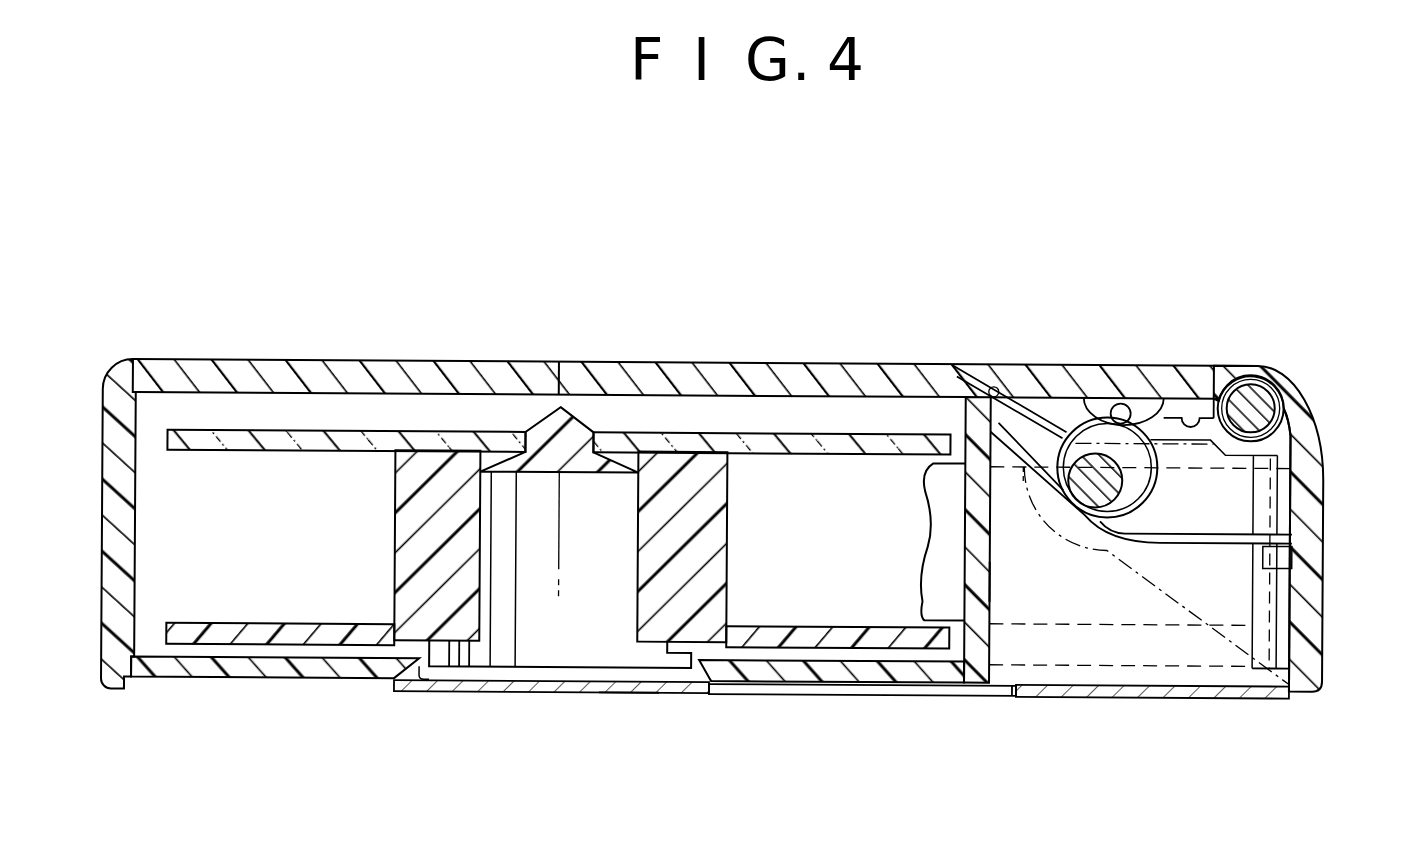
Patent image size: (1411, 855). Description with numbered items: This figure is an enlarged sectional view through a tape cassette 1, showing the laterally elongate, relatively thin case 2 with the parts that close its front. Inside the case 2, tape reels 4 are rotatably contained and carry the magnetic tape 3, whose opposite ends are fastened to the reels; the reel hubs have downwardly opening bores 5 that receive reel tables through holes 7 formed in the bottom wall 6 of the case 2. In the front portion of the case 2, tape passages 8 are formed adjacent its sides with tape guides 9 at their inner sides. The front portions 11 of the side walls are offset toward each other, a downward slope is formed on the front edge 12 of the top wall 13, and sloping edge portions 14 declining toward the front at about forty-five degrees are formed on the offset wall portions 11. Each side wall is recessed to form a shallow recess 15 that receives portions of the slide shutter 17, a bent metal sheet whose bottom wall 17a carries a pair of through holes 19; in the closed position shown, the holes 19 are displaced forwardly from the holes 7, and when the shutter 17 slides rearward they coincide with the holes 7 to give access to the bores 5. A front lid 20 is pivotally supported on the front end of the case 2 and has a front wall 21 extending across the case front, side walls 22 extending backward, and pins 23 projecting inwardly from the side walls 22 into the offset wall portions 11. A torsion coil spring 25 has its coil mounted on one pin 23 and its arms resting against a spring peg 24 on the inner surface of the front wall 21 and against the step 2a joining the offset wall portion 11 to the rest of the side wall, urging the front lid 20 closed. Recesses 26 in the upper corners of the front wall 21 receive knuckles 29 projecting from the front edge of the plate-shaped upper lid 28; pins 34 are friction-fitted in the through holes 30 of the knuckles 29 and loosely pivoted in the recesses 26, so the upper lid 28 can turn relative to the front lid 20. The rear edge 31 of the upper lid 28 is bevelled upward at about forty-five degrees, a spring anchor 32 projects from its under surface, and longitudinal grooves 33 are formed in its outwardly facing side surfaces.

The tape cassette 1 is at (1150, 244).
The case 2 is at (650, 362).
The corner or step 2a is at (993, 570).
The magnetic tape 3 is at (933, 547).
The tape reels 4 is at (270, 433).
The bores 5 is at (480, 601).
The bottom wall 6 is at (168, 683).
The holes 7 is at (428, 683).
The tape passages 8 is at (1300, 652).
The tape guides 9 is at (1327, 636).
The front portions of the side walls 11 is at (993, 598).
The front edge 12 is at (985, 373).
The top wall 13 is at (788, 362).
The sloping edge portions 14 is at (1040, 398).
The recess 15 is at (282, 682).
The slide shutter 17 is at (567, 693).
The bottom wall 17a is at (627, 694).
The through holes 19 is at (722, 694).
The front lid 20 is at (1328, 471).
The front wall 21 is at (1327, 573).
The side walls 22 is at (1185, 605).
The pins 23 is at (1128, 486).
The spring peg 24 is at (1262, 562).
The torsion coil spring 25 is at (1165, 469).
The recesses 26 is at (1292, 407).
The upper lid 28 is at (1178, 395).
The knuckles 29 is at (1270, 379).
The through holes 30 is at (1282, 387).
The rear edge 31 is at (1000, 383).
The spring anchor 32 is at (1120, 402).
The longitudinal grooves 33 is at (1222, 395).
The pins 34 is at (1282, 380).